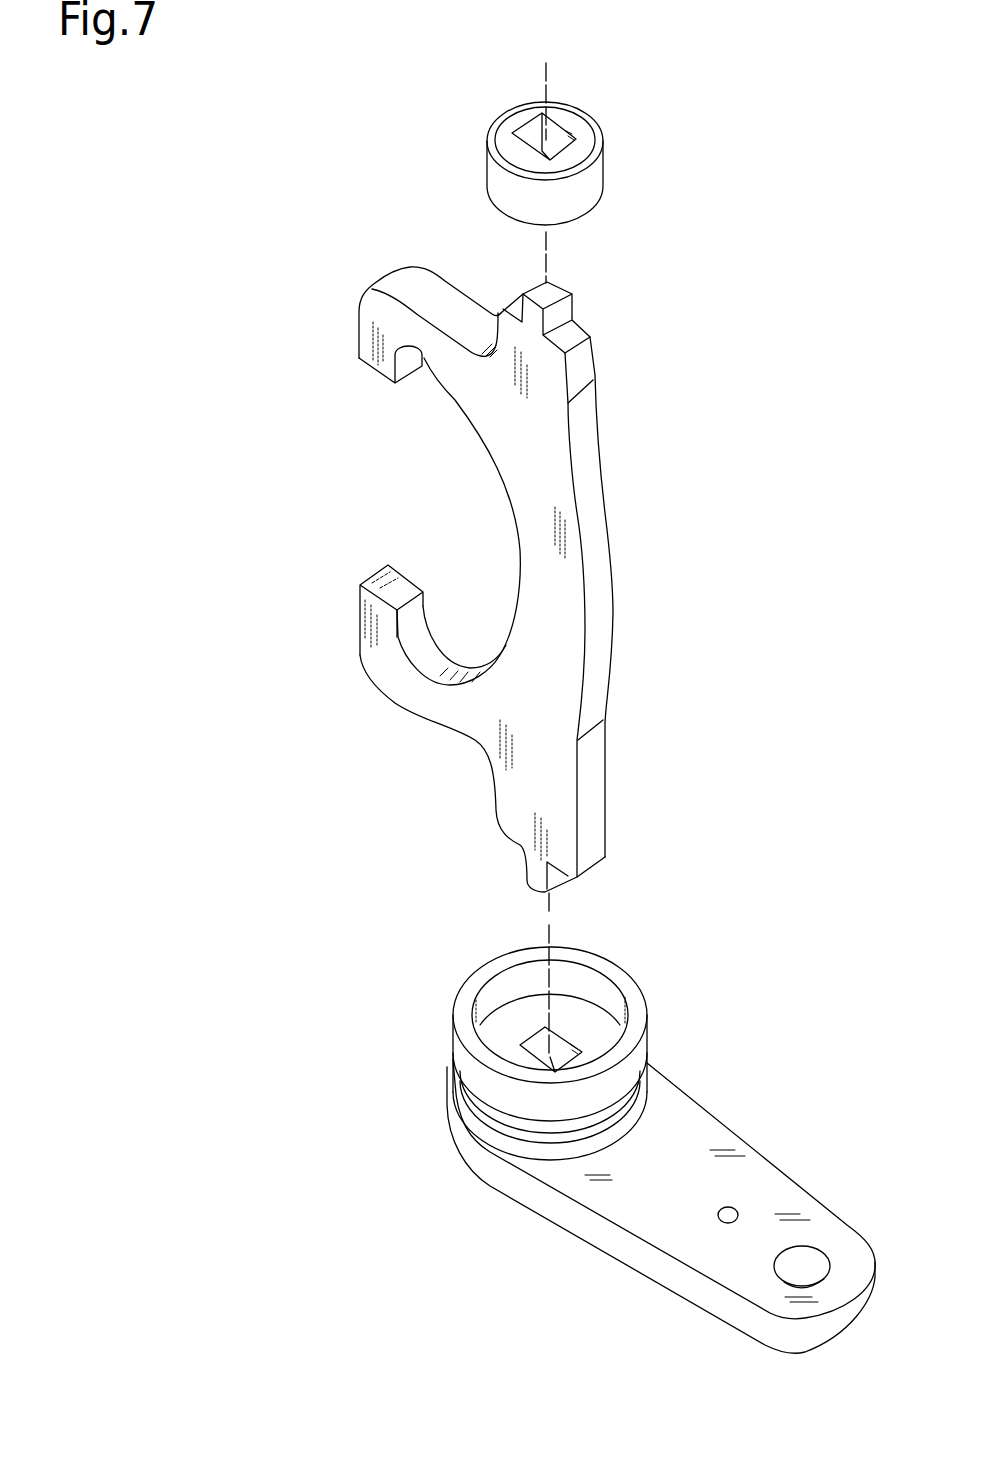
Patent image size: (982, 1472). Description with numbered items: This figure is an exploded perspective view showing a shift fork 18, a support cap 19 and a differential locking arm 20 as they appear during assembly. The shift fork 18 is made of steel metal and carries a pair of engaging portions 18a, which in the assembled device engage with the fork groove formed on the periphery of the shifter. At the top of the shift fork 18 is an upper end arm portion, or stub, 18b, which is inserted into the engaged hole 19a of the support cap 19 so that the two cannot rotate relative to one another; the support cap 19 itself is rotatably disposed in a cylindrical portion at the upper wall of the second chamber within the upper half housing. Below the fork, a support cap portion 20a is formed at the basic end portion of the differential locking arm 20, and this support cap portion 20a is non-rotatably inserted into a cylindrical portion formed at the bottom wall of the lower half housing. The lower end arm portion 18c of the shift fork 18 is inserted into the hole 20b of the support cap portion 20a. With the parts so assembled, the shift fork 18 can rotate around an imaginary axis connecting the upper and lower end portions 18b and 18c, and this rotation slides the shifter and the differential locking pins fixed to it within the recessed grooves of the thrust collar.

The shift fork 18 is at (525, 578).
The engaging portions 18a is at (380, 383).
The upper end arm portion 18b is at (557, 289).
The lower end arm portion 18c is at (537, 875).
The support cap 19 is at (577, 147).
The engaged hole 19a is at (557, 138).
The differential locking arm 20 is at (616, 1138).
The support cap portion 20a is at (527, 1042).
The hole 20b is at (560, 1048).